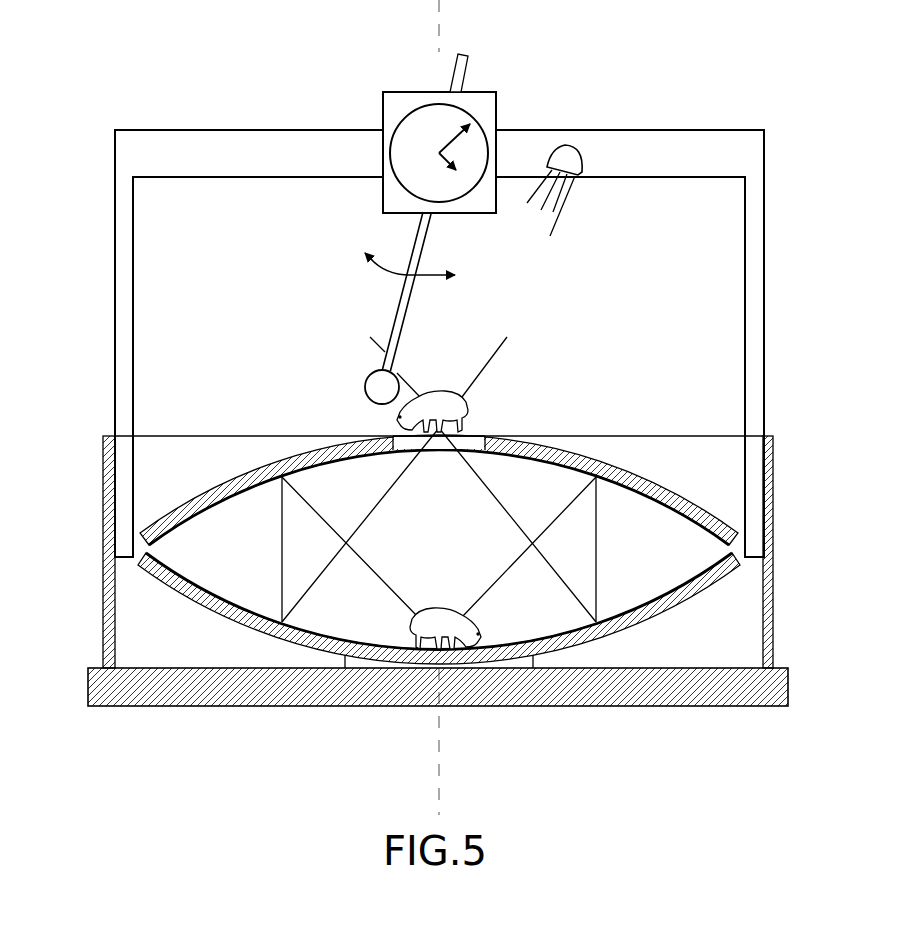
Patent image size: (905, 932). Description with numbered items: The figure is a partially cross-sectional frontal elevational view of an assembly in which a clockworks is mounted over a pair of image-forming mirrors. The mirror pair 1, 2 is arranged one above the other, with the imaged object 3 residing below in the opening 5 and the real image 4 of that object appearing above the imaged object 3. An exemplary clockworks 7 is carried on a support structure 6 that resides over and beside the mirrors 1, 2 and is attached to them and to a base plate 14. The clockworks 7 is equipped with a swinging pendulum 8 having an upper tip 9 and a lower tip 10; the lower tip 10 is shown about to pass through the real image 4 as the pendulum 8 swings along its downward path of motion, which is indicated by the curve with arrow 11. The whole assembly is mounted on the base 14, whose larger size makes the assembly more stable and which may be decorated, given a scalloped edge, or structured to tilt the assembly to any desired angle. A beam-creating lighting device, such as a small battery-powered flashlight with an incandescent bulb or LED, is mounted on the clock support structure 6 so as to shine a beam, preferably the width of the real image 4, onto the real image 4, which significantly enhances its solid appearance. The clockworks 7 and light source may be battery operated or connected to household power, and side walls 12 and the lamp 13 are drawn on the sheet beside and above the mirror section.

The mirror 1 is at (580, 649).
The mirror 2 is at (620, 464).
The imaged object 3 is at (412, 621).
The real image 4 is at (441, 392).
The opening 5 is at (474, 458).
The support structure 6 is at (254, 128).
The clockworks 7 is at (489, 208).
The swinging pendulum 8 is at (427, 238).
The tip 9 is at (465, 80).
The lower tip 10 is at (366, 390).
The curve with arrow 11 is at (380, 268).
The side wall 12 is at (106, 533).
The light source 13 is at (573, 146).
The base plate 14 is at (560, 707).